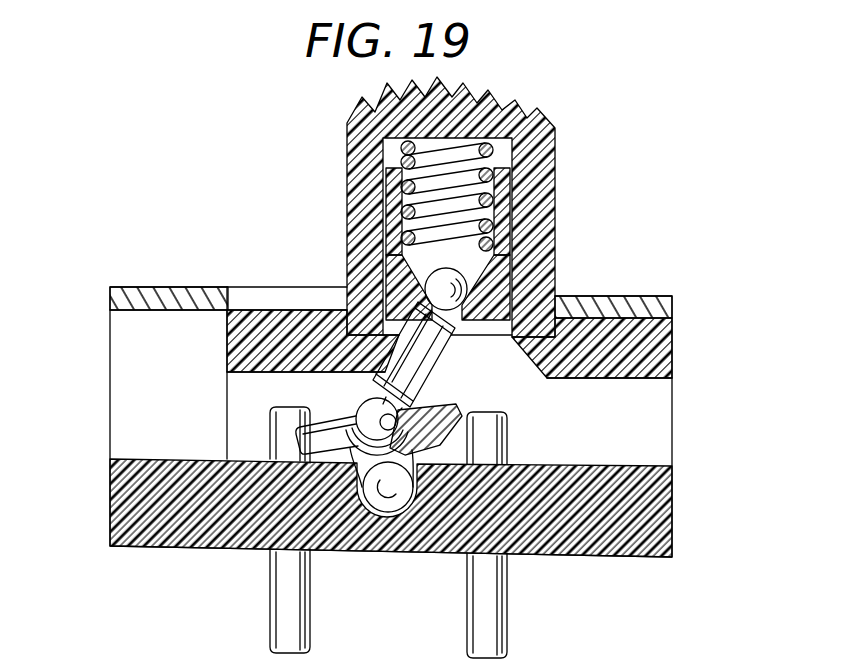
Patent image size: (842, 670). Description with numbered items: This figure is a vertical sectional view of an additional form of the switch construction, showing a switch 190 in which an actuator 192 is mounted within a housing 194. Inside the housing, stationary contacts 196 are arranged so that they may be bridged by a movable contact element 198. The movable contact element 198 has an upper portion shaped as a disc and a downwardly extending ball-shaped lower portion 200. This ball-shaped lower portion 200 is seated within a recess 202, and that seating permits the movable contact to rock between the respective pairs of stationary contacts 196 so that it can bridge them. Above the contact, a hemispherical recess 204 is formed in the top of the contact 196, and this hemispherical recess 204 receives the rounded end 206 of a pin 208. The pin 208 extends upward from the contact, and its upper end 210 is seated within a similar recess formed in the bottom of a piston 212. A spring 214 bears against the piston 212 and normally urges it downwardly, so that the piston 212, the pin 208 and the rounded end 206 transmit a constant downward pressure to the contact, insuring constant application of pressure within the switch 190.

The switch 190 is at (203, 208).
The actuator 192 is at (358, 183).
The housing 194 is at (113, 410).
The stationary contacts 196 is at (285, 422).
The movable contact element 198 is at (334, 430).
The ball-shaped lower portion 200 is at (383, 520).
The recess 202 is at (412, 452).
The hemispherical recess 204 is at (398, 411).
The rounded end 206 is at (364, 398).
The pin 208 is at (432, 347).
The upper end 210 is at (470, 291).
The piston 212 is at (520, 270).
The spring 214 is at (505, 191).